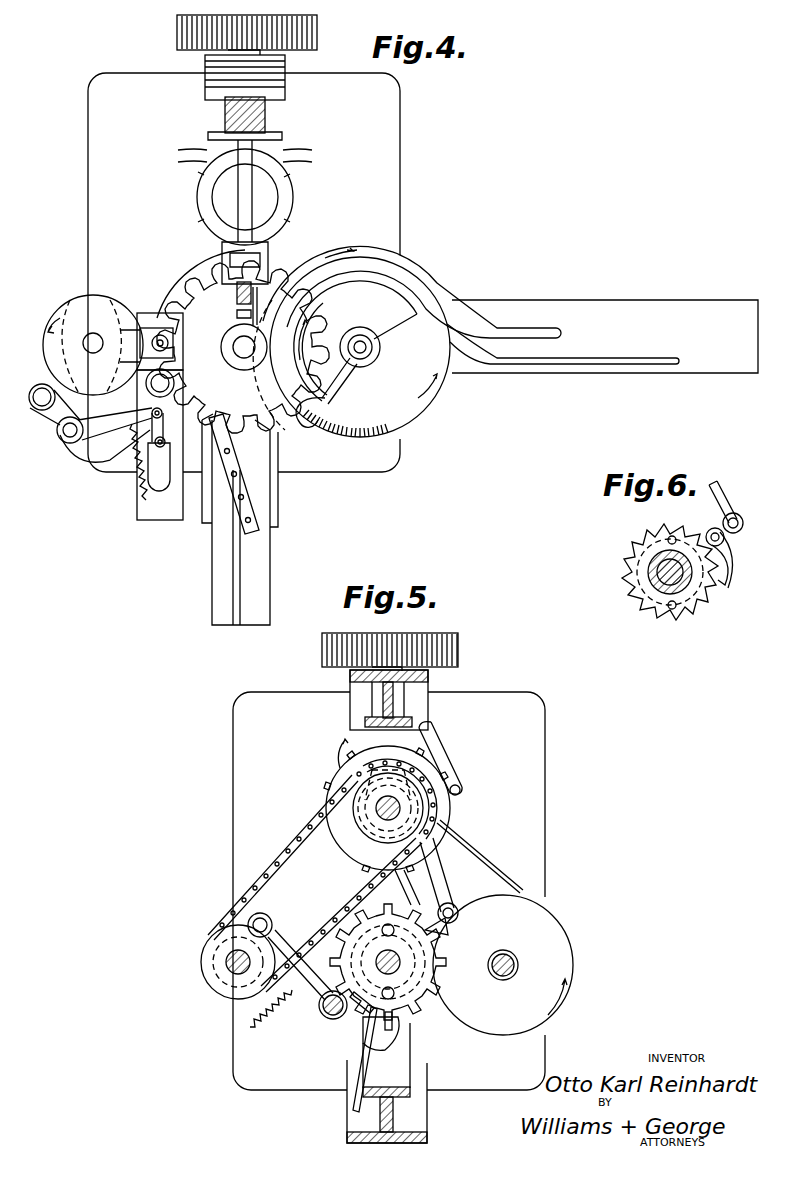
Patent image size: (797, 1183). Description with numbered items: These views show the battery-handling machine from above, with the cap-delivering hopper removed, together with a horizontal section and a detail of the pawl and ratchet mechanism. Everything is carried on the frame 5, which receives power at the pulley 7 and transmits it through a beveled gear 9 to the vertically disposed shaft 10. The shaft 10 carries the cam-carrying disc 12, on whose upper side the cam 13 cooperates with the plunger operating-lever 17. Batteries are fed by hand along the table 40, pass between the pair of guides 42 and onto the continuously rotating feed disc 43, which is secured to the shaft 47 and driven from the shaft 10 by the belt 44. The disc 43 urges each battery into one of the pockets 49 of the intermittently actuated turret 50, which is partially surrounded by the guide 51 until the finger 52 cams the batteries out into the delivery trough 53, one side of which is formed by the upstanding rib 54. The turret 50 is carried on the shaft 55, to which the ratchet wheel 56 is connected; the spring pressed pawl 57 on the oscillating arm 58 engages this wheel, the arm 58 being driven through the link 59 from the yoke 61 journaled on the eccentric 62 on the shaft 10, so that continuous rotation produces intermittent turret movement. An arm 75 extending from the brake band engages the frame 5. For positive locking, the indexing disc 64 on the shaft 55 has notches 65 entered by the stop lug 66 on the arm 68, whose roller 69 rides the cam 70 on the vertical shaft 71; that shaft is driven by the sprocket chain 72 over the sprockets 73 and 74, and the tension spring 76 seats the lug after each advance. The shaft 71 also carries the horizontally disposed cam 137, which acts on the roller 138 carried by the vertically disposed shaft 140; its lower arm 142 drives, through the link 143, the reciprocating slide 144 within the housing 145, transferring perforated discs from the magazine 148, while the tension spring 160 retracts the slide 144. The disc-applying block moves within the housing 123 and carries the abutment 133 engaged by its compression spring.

In FIG. 4, the frame 5 is at (275, 78).
In FIG. 5, the frame 5 is at (420, 700).
In FIG. 4, the pulley 7 is at (317, 34).
In FIG. 5, the pulley 7 is at (459, 651).
In FIG. 5, the beveled gear 9 is at (352, 852).
In FIG. 5, the vertically disposed shaft 10 is at (400, 800).
In FIG. 4, the cam-carrying disc 12 is at (268, 196).
In FIG. 4, the cam 13 is at (283, 208).
In FIG. 4, the plunger operating-lever 17 is at (242, 203).
In FIG. 4, the table 40 is at (680, 302).
In FIG. 4, the guides 42 is at (545, 330).
In FIG. 4, the feed disc 43 is at (422, 413).
In FIG. 5, the feed disc 43 is at (570, 962).
In FIG. 5, the belt 44 is at (490, 868).
In FIG. 4, the shaft 47 is at (368, 348).
In FIG. 5, the shaft 47 is at (518, 965).
In FIG. 4, the pockets 49 is at (300, 300).
In FIG. 4, the intermittently actuated turret 50 is at (243, 347).
In FIG. 4, the guide 51 is at (157, 280).
In FIG. 4, the finger 52 is at (262, 462).
In FIG. 4, the delivery trough 53 is at (226, 624).
In FIG. 4, the upstanding rib 54 is at (246, 578).
In FIG. 4, the shaft 55 is at (242, 347).
In FIG. 5, the shaft 55 is at (398, 958).
In FIG. 6, the shaft 55 is at (668, 580).
In FIG. 6, the ratchet wheel 56 is at (655, 560).
In FIG. 6, the spring pressed pawl 57 is at (722, 570).
In FIG. 6, the oscillating arm 58 is at (711, 528).
In FIG. 5, the link 59 is at (440, 893).
In FIG. 6, the link 59 is at (740, 490).
In FIG. 5, the yoke 61 is at (440, 808).
In FIG. 5, the eccentric 62 is at (432, 760).
In FIG. 5, the indexing disc 64 is at (425, 1012).
In FIG. 5, the notches 65 is at (365, 1012).
In FIG. 5, the stop lug 66 is at (395, 1020).
In FIG. 5, the arm 68 is at (310, 992).
In FIG. 5, the roller 69 is at (270, 920).
In FIG. 5, the cam 70 is at (250, 922).
In FIG. 4, the vertical shaft 71 is at (95, 338).
In FIG. 5, the vertical shaft 71 is at (232, 972).
In FIG. 5, the sprocket chain 72 is at (278, 868).
In FIG. 5, the sprocket 73 is at (460, 789).
In FIG. 5, the sprocket 74 is at (203, 958).
In FIG. 5, the arm 75 is at (356, 1092).
In FIG. 5, the tension spring 76 is at (258, 1020).
In FIG. 4, the housing 123 is at (148, 322).
In FIG. 4, the abutment 133 is at (166, 338).
In FIG. 4, the horizontally disposed cam 137 is at (55, 315).
In FIG. 4, the roller 138 is at (49, 410).
In FIG. 4, the vertically disposed shaft 140 is at (68, 440).
In FIG. 4, the arm 142 is at (105, 455).
In FIG. 4, the link 143 is at (152, 420).
In FIG. 4, the reciprocating slide 144 is at (163, 470).
In FIG. 4, the housing 145 is at (183, 512).
In FIG. 4, the magazine 148 is at (174, 383).
In FIG. 4, the tension spring 160 is at (158, 448).